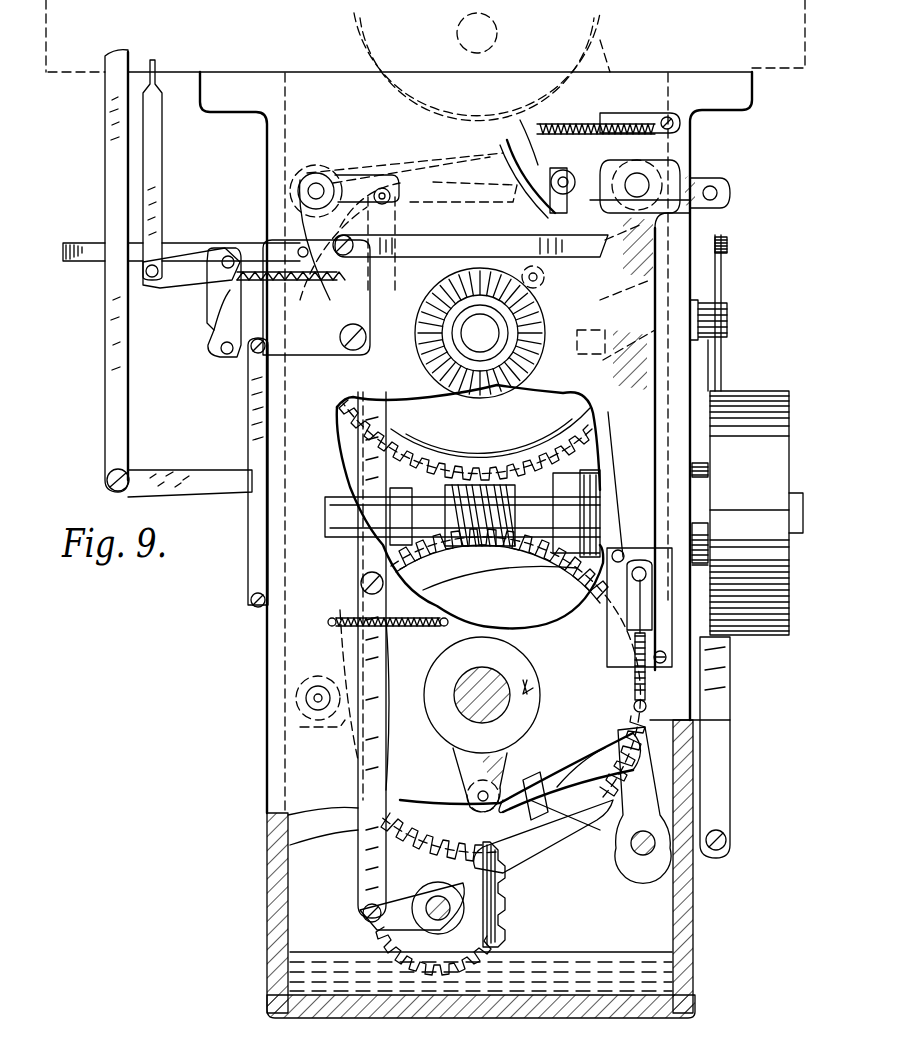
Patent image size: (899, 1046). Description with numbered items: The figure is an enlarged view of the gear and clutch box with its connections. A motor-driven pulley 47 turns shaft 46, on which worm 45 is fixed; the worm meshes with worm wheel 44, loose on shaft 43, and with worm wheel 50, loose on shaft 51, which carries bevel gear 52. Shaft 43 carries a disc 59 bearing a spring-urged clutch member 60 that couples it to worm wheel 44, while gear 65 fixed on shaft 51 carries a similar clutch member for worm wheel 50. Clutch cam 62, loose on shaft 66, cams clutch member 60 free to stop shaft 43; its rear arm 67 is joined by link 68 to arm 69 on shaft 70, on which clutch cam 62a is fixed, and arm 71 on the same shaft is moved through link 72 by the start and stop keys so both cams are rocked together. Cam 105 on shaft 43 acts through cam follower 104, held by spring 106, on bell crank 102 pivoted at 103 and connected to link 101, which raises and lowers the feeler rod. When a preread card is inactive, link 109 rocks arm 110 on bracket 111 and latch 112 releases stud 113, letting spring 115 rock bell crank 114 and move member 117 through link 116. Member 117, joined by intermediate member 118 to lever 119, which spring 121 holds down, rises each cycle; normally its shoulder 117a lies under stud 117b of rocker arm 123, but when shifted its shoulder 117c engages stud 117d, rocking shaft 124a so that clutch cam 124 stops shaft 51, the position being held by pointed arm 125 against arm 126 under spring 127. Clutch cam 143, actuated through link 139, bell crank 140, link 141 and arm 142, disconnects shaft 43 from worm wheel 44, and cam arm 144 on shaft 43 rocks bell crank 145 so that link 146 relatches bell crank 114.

The shaft 43 is at (496, 686).
The worm wheel 44 is at (567, 582).
The worm 45 is at (497, 530).
The shaft 46 is at (540, 512).
The pulley 47 is at (746, 410).
The worm wheel 50 is at (556, 458).
The shaft 51 is at (484, 334).
The bevel gear 52 is at (455, 295).
The disc or wheel 59 is at (560, 782).
The clutch member 60 is at (533, 806).
The clutch cam 62 is at (520, 850).
The clutch cam 62a is at (445, 185).
The gear 65 is at (586, 453).
The shaft 66 is at (428, 910).
The rear arm 67 is at (398, 903).
The link 68 is at (368, 829).
The arm 69 is at (352, 165).
The shaft 70 is at (298, 183).
The arm 71 is at (290, 207).
The link 72 is at (90, 252).
The link 101 is at (123, 440).
The bell crank 102 is at (218, 487).
The pivot 103 is at (328, 478).
The cam follower 104 is at (300, 695).
The cam 105 is at (300, 727).
The spring 106 is at (412, 628).
The link 109 is at (160, 165).
The arm 110 is at (205, 268).
The bracket 111 is at (248, 240).
The latch 112 is at (218, 325).
The stud 113 is at (225, 355).
The bell crank 114 is at (292, 343).
The spring 115 is at (235, 288).
The link 116 is at (478, 250).
The arm 117 is at (652, 257).
The shoulder 117a is at (696, 195).
The stud 117b is at (718, 193).
The shoulder 117c is at (507, 140).
The stud 117d is at (598, 190).
The intermediate member 118 is at (650, 592).
The lever 119 is at (650, 617).
The spring 121 is at (647, 692).
The rocker arm 123 is at (692, 200).
The clutch cam 124 is at (600, 355).
The shaft 124a is at (637, 175).
The pointed arm 125 is at (521, 121).
The arm 126 is at (537, 124).
The spring 127 is at (608, 72).
The link 139 is at (728, 245).
The bell crank 140 is at (722, 285).
The link 141 is at (718, 747).
The arm 142 is at (724, 838).
The clutch cam 143 is at (640, 800).
The cam arm 144 is at (477, 772).
The bell crank 145 is at (380, 732).
The link 146 is at (262, 408).